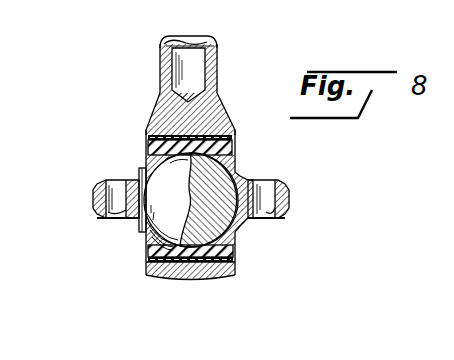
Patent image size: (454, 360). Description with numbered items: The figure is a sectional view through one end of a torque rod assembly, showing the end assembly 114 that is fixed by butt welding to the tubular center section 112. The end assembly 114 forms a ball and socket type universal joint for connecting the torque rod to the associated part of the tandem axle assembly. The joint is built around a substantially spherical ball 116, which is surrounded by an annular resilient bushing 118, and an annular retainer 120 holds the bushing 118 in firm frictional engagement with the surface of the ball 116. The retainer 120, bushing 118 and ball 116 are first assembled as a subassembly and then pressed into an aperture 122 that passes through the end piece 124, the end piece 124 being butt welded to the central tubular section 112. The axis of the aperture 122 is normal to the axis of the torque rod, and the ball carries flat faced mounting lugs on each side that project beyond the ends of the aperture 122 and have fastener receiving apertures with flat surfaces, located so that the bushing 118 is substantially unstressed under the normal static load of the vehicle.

The tubular center section 112 is at (203, 46).
The end assembly 114 is at (162, 82).
The ball 116 is at (236, 236).
The annular resilient bushing 118 is at (147, 147).
The annular retainer 120 is at (148, 261).
The aperture 122 is at (236, 142).
The end piece 124 is at (157, 103).